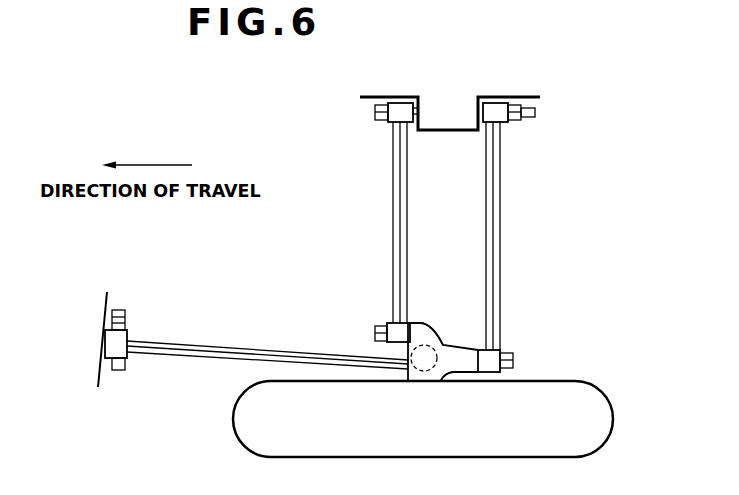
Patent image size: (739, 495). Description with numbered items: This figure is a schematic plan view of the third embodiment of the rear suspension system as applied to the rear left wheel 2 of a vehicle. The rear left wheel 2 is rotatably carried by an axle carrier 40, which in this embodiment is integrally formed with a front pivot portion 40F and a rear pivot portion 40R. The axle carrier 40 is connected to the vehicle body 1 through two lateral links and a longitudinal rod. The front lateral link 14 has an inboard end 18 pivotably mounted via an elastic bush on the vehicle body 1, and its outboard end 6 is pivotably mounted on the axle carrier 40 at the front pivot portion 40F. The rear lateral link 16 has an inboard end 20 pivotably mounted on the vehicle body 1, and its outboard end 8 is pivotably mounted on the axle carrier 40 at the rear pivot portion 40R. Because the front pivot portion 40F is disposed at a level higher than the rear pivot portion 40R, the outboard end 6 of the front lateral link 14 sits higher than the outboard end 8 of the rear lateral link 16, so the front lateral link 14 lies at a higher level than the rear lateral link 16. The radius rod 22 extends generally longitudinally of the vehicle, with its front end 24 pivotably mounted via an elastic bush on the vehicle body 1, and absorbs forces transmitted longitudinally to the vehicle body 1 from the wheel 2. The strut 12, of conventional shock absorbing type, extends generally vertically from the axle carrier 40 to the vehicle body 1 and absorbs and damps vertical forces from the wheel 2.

The vehicle body 1 is at (360, 98).
The rear left wheel 2 is at (602, 402).
The outboard end of the front lateral link 6 is at (390, 330).
The outboard end of the rear lateral link 8 is at (493, 357).
The strut 12 is at (419, 371).
The front lateral link 14 is at (393, 208).
The rear lateral link 16 is at (500, 210).
The inboard end of the front lateral link 18 is at (395, 118).
The inboard end of the rear lateral link 20 is at (503, 116).
The radius rod 22 is at (245, 347).
The front end of the radius rod 24 is at (120, 345).
The axle carrier 40 is at (473, 328).
The front pivot portion 40F is at (421, 323).
The rear pivot portion 40R is at (467, 370).